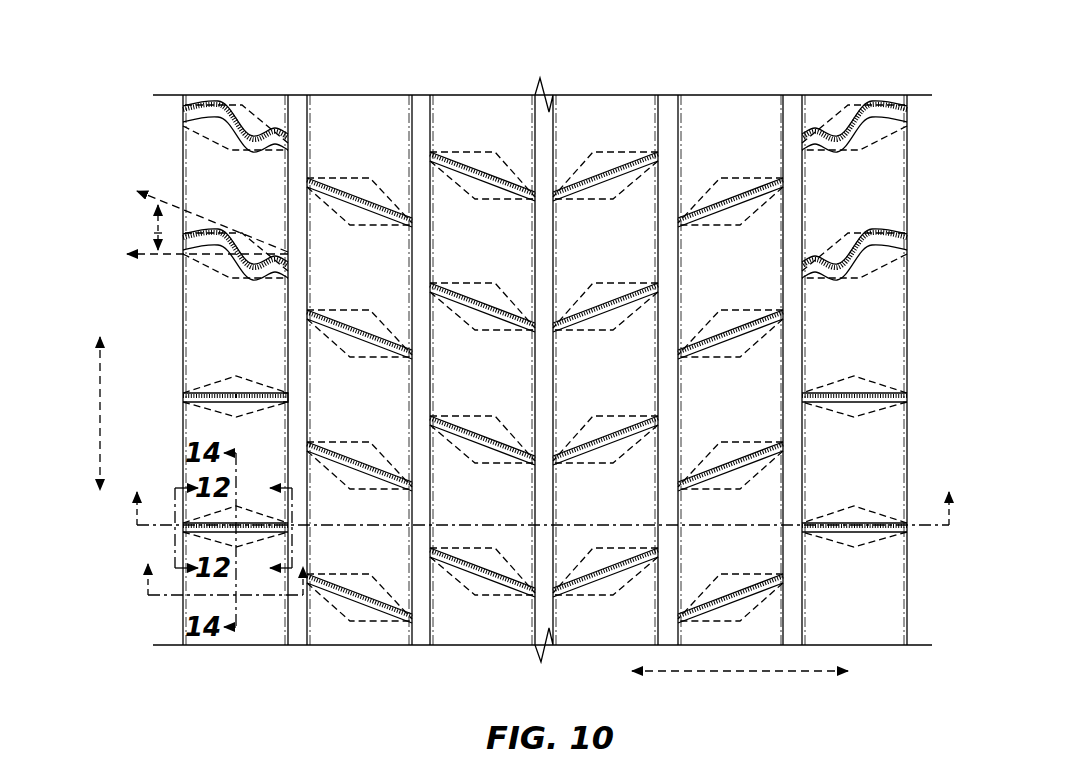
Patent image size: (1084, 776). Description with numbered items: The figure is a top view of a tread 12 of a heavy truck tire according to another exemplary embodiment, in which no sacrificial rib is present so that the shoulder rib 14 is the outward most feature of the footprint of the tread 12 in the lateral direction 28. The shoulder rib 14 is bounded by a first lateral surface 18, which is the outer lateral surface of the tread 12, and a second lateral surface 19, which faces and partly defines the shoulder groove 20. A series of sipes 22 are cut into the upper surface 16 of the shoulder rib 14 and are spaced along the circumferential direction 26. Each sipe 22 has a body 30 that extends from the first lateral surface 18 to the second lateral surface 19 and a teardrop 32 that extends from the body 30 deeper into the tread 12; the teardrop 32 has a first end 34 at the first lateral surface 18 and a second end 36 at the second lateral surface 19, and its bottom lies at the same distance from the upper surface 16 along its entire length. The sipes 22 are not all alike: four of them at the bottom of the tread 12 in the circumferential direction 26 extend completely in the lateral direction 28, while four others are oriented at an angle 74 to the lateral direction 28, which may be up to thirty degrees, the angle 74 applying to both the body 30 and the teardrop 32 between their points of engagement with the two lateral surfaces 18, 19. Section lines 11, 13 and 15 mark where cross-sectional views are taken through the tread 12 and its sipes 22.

The tread 12 is at (841, 72).
The shoulder rib 14 is at (268, 100).
The upper surface 16 is at (204, 156).
The first lateral surface 18 is at (185, 305).
The second lateral surface 19 is at (286, 227).
The shoulder groove 20 is at (300, 100).
The sipe 22 is at (277, 397).
The circumferential direction 26 is at (100, 426).
The lateral direction 28 is at (735, 673).
The body 30 is at (220, 395).
The teardrop 32 is at (243, 382).
The first end 34 is at (183, 397).
The second end 36 is at (290, 400).
The angle 74 is at (158, 233).
The section line 11- 11 is at (545, 491).
The section line 13- 13 is at (263, 528).
The section line 15- 15 is at (228, 563).